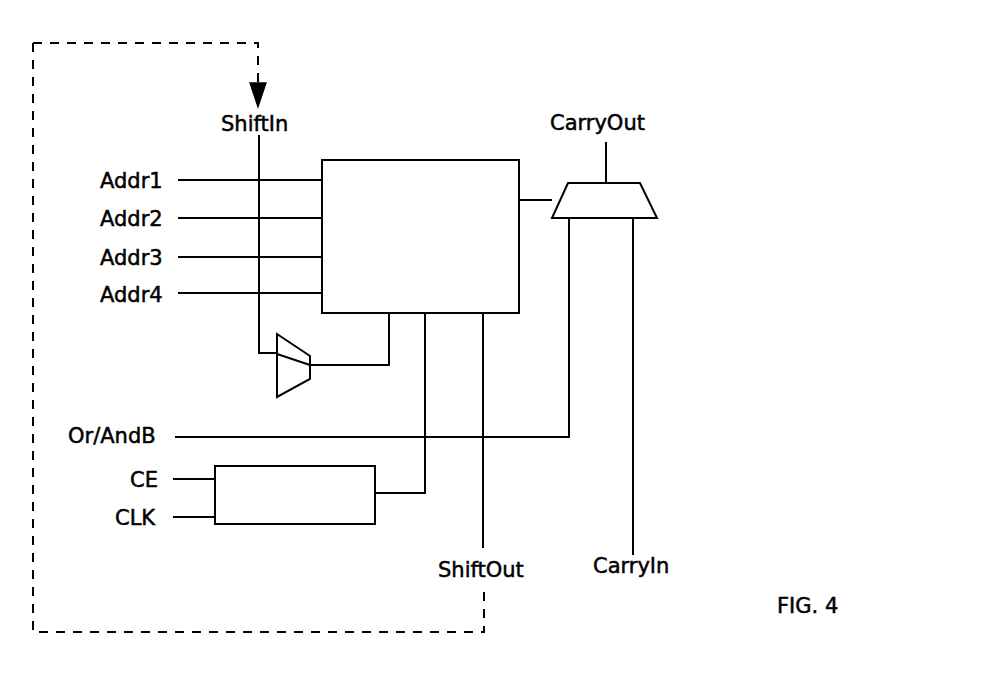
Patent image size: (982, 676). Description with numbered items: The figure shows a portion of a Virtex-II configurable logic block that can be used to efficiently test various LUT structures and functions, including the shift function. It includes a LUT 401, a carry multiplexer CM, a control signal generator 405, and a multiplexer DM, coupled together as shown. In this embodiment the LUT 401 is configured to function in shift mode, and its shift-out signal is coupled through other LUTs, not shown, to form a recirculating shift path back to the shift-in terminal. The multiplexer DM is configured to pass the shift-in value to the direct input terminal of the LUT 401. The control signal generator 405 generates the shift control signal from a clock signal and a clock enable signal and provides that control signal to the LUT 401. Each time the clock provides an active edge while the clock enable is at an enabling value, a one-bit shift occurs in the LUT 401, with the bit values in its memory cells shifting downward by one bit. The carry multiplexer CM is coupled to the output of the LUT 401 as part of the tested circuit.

The LUT 401 is at (433, 262).
The control signal generator 405 is at (364, 507).
The carry multiplexer CM is at (648, 197).
The multiplexer DM is at (300, 383).